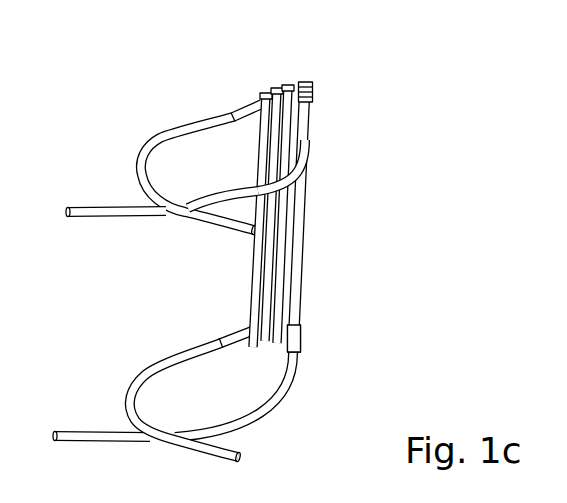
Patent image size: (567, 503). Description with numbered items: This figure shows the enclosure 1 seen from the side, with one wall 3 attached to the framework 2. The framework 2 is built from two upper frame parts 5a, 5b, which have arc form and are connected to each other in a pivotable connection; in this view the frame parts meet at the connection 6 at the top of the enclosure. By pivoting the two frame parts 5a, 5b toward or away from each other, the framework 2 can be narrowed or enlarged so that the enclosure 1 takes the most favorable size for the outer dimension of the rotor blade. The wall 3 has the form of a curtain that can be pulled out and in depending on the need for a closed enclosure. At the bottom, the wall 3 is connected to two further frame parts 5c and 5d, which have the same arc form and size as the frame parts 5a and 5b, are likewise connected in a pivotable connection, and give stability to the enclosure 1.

The enclosure 1 is at (359, 79).
The framework 2 is at (96, 123).
The wall 3 is at (282, 238).
The frame part 5a is at (303, 165).
The frame part 5b is at (185, 130).
The frame part 5c is at (291, 392).
The frame part 5d is at (178, 352).
The connection 6 is at (303, 82).